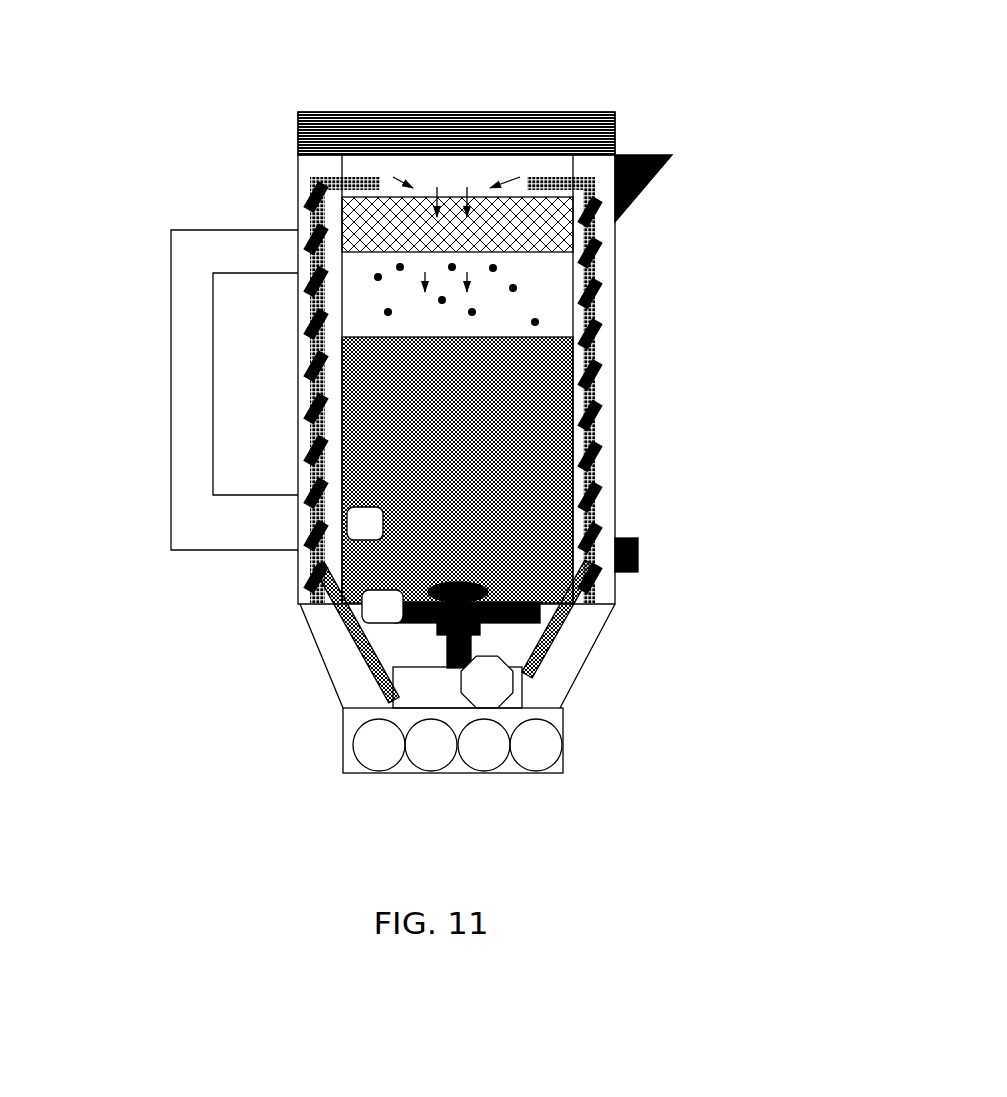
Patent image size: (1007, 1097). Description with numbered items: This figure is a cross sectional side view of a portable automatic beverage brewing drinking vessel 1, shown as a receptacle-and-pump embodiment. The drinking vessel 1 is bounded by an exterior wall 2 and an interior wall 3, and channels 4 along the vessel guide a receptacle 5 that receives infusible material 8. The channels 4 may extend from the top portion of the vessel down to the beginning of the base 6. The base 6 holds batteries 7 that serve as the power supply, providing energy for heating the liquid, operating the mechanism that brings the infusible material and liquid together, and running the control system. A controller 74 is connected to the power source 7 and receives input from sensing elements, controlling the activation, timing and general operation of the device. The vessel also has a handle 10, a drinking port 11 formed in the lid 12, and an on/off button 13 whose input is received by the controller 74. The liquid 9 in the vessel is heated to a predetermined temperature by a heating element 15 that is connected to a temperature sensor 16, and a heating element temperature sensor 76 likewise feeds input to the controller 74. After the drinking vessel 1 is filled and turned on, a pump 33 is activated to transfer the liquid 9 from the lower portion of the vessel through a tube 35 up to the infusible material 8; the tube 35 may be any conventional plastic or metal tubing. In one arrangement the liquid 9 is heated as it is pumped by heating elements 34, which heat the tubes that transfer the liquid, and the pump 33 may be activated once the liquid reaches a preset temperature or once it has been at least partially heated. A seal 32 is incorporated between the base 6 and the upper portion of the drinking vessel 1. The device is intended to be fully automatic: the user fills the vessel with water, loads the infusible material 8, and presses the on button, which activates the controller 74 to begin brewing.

The drinking vessel 1 is at (658, 78).
The exterior wall 2 is at (615, 422).
The interior wall 3 is at (573, 453).
The channels 4 is at (598, 508).
The receptacle 5 is at (513, 213).
The base 6 is at (573, 645).
The batteries 7 is at (535, 741).
The infusible material 8 is at (452, 217).
The liquid 9 is at (365, 302).
The handle 10 is at (180, 215).
The drinking port 11 is at (674, 153).
The lid 12 is at (617, 123).
The on/off button 13 is at (640, 550).
The heating element 15 is at (541, 610).
The temperature sensor 16 is at (350, 518).
The seal 32 is at (437, 635).
The pump 33 is at (427, 678).
The heating elements 34 is at (302, 200).
The tube 35 is at (362, 613).
The controller 74 is at (485, 697).
The heating element temperature sensor 76 is at (318, 563).